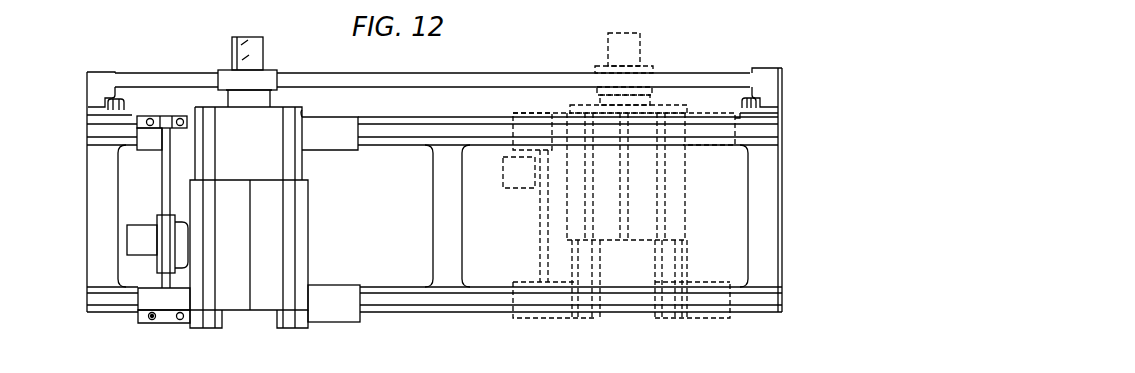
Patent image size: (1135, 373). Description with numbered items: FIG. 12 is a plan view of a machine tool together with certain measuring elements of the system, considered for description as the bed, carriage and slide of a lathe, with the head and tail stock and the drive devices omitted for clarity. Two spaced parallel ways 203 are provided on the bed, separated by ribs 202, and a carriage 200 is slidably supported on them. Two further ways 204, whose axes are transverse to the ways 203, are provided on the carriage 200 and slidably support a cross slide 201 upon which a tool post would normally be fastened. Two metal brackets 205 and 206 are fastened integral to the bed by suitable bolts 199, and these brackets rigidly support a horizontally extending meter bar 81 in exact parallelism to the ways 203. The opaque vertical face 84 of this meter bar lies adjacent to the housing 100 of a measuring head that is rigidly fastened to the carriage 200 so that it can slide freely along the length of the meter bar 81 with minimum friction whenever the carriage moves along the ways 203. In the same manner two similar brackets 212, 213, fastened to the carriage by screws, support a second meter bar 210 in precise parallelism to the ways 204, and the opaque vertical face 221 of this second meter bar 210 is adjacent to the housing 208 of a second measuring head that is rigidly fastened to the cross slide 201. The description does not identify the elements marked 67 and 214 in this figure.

The drive assembly 67 is at (688, 108).
The meter bar 81 is at (491, 80).
The opaque vertical face 84 is at (380, 77).
The housing 100 is at (262, 57).
The bolts 199 is at (106, 107).
The carriage 200 is at (356, 119).
The cross slide 201 is at (300, 254).
The ribs 202 is at (95, 244).
The ways 203 is at (428, 132).
The ways 204 is at (214, 171).
The bracket 205 is at (100, 76).
The bracket 206 is at (756, 74).
The housing 208 is at (142, 233).
The second meter bar 210 is at (164, 286).
The bracket 212 is at (170, 116).
The bracket 213 is at (166, 324).
The bolt 214 is at (150, 320).
The opaque vertical face 221 is at (160, 184).